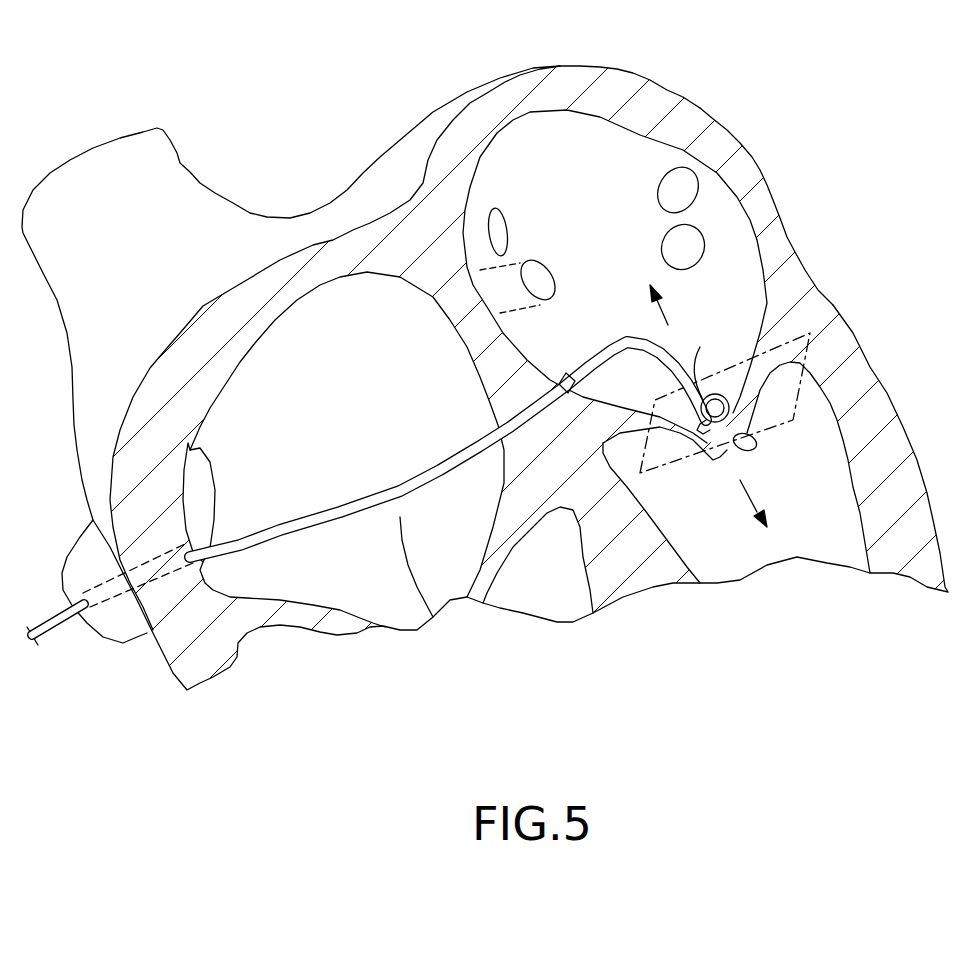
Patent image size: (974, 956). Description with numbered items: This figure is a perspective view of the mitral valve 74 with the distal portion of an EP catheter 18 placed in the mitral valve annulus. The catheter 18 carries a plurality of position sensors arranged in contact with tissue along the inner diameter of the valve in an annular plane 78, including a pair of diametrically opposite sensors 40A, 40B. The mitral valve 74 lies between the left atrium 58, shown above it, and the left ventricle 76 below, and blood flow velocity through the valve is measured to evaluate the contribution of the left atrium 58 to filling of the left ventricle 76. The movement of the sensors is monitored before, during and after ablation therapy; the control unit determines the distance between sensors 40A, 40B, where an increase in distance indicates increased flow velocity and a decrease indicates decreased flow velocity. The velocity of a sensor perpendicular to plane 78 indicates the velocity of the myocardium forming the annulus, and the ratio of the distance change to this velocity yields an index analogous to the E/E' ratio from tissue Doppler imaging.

The EP catheter 18 is at (357, 462).
The left atrium 58 is at (628, 157).
The position sensor 40A is at (710, 397).
The position sensor 40B is at (755, 440).
The mitral valve 74 is at (718, 492).
The left ventricle 76 is at (843, 493).
The annular plane 78 is at (833, 325).